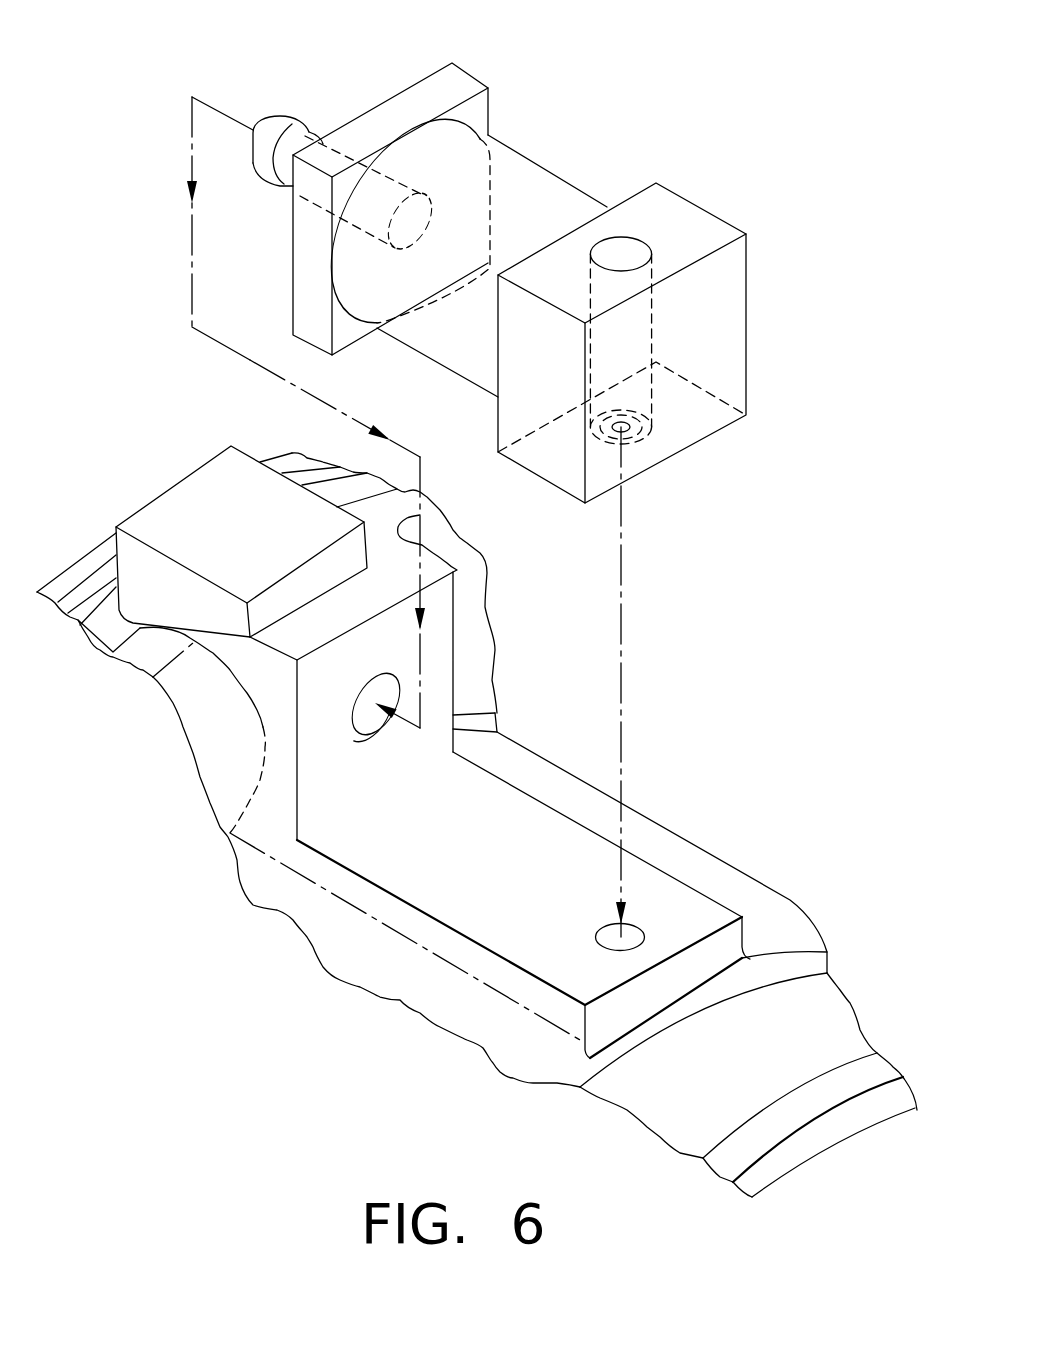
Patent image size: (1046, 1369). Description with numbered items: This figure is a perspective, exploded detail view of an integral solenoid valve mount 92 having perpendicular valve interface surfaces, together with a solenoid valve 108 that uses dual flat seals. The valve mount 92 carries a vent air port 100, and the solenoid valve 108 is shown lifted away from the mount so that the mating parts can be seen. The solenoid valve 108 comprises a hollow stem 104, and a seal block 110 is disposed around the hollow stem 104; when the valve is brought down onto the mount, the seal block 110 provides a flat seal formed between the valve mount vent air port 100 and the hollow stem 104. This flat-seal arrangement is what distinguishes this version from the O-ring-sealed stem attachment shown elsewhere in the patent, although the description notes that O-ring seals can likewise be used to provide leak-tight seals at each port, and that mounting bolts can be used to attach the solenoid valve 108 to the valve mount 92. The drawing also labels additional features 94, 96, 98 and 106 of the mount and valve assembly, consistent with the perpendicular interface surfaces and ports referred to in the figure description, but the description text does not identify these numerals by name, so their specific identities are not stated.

The valve mount 92 is at (300, 948).
The horizontal mounting surface 94 is at (422, 846).
The vertical mounting surface 96 is at (340, 690).
The mounting hole 98 is at (605, 926).
The valve mount vent air port 100 is at (391, 731).
The hollow stem 104 is at (433, 228).
The sensor mounting block 106 is at (621, 437).
The solenoid valve 108 is at (566, 138).
The seal block 110 is at (470, 72).